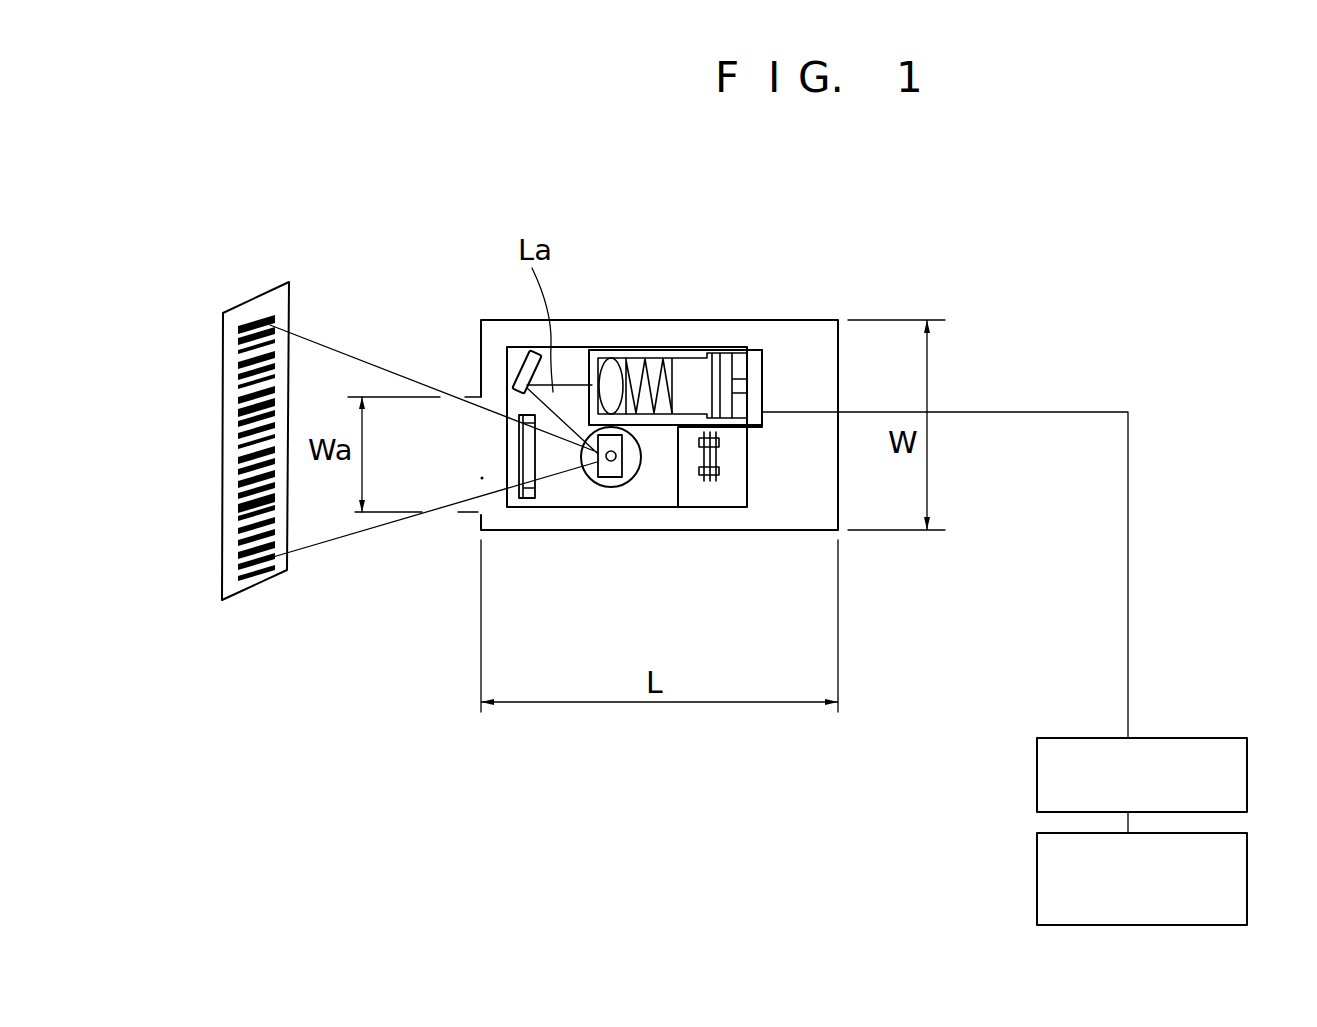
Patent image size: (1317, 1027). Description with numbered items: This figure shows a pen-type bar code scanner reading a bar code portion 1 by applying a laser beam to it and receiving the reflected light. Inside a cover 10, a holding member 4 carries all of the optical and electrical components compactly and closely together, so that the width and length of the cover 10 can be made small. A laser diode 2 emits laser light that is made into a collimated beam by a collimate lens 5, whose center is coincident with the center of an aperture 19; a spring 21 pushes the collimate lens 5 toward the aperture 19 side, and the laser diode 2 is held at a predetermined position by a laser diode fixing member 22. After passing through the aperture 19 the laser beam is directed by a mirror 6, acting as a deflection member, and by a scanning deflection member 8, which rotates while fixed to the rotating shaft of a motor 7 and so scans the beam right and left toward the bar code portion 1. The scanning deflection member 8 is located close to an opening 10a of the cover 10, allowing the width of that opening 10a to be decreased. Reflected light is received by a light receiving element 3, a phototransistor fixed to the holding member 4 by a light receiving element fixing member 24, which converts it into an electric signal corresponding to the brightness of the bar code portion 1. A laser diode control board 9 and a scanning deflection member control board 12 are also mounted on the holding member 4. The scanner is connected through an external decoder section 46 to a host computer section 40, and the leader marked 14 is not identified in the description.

The bar code portion 1 is at (232, 580).
The laser diode 2 is at (694, 372).
The light receiving element 3 is at (527, 457).
The holding member 4 is at (647, 490).
The collimate lens 5 is at (611, 380).
The mirror 6 is at (522, 354).
The motor 7 is at (590, 480).
The scanning deflection member 8 is at (611, 478).
The laser diode control board 9 is at (753, 370).
The cover 10 is at (648, 319).
The opening 10a is at (477, 481).
The scanning deflection member control board 12 is at (718, 495).
The reflecting mirror 14 is at (515, 367).
The aperture 19 is at (588, 382).
The spring 21 is at (636, 380).
The laser diode fixing member 22 is at (728, 366).
The light receiving element fixing member 24 is at (515, 440).
The host computer section 40 is at (1248, 875).
The decoder section 46 is at (1248, 777).